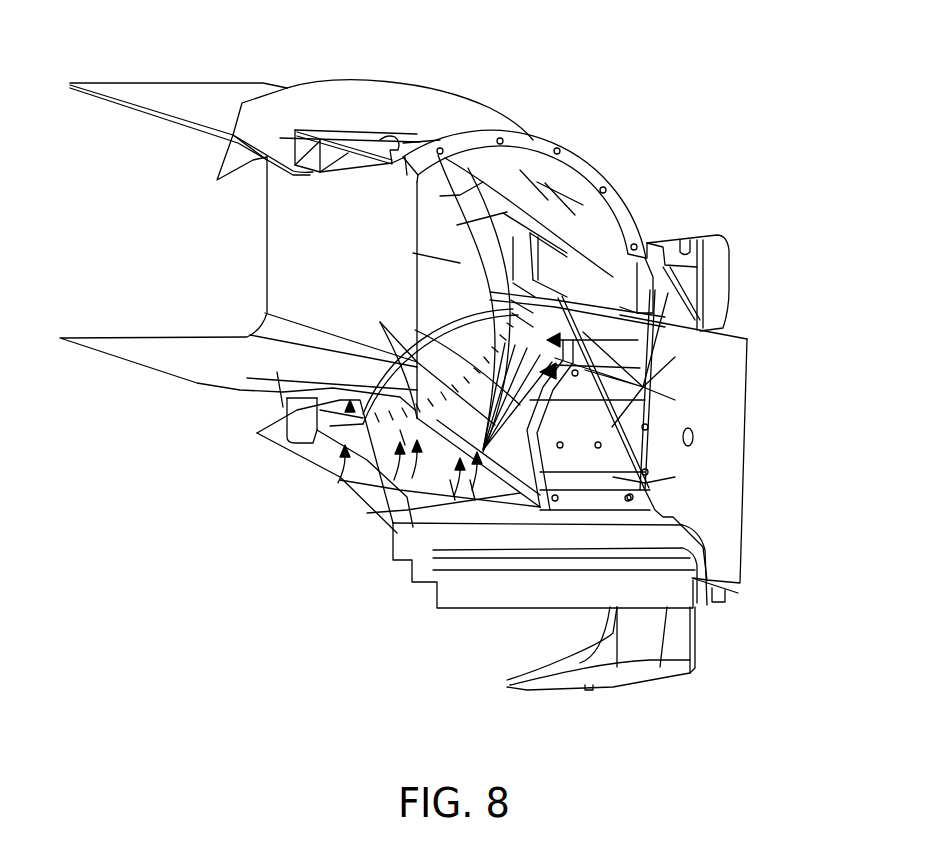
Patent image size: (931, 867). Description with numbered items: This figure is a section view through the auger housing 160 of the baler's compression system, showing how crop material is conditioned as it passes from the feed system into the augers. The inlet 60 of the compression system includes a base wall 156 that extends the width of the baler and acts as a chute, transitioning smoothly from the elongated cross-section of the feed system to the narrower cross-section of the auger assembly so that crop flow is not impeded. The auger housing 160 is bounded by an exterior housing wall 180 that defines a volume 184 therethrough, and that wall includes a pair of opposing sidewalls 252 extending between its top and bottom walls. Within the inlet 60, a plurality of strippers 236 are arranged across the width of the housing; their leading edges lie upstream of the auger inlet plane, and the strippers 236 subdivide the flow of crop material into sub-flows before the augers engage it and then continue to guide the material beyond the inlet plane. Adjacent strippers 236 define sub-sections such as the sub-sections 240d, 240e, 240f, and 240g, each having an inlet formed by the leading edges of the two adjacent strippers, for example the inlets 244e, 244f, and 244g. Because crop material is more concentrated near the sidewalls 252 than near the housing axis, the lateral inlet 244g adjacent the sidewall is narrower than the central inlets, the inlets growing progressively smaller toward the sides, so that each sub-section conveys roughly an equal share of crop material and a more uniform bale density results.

The inlet 60 is at (432, 507).
The base wall 156 is at (613, 477).
The auger housing 160 is at (345, 142).
The exterior housing wall 180 is at (380, 142).
The volume 184 is at (317, 447).
The strippers 236 is at (525, 192).
The sub-section 240d is at (367, 460).
The sub-section 240e is at (387, 480).
The sub-section 240f is at (450, 480).
The sub-section 240g is at (620, 375).
The inlet 244e is at (420, 500).
The inlet 244f is at (470, 480).
The inlet 244g is at (637, 340).
The sidewalls 252 is at (637, 340).